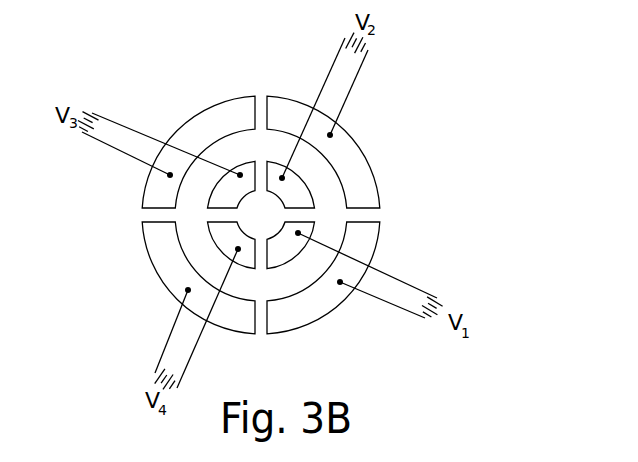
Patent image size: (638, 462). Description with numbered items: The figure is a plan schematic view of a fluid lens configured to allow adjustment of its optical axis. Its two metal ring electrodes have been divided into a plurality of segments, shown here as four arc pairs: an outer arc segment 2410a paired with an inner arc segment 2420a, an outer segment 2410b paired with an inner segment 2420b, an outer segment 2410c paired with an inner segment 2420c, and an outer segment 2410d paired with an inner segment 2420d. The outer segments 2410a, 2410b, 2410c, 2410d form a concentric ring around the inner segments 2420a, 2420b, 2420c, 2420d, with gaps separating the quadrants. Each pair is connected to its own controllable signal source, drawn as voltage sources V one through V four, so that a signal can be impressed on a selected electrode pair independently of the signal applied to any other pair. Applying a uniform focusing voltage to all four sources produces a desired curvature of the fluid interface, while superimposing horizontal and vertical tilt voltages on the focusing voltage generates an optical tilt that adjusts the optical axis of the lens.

The outer ring electrode segment 2410a is at (372, 243).
The outer ring electrode segment 2410b is at (366, 198).
The outer ring electrode segment 2410c is at (215, 128).
The outer ring electrode segment 2410d is at (177, 276).
The inner ring electrode segment 2420a is at (288, 254).
The inner ring electrode segment 2420b is at (302, 188).
The inner ring electrode segment 2420c is at (215, 198).
The inner ring electrode segment 2420d is at (218, 232).